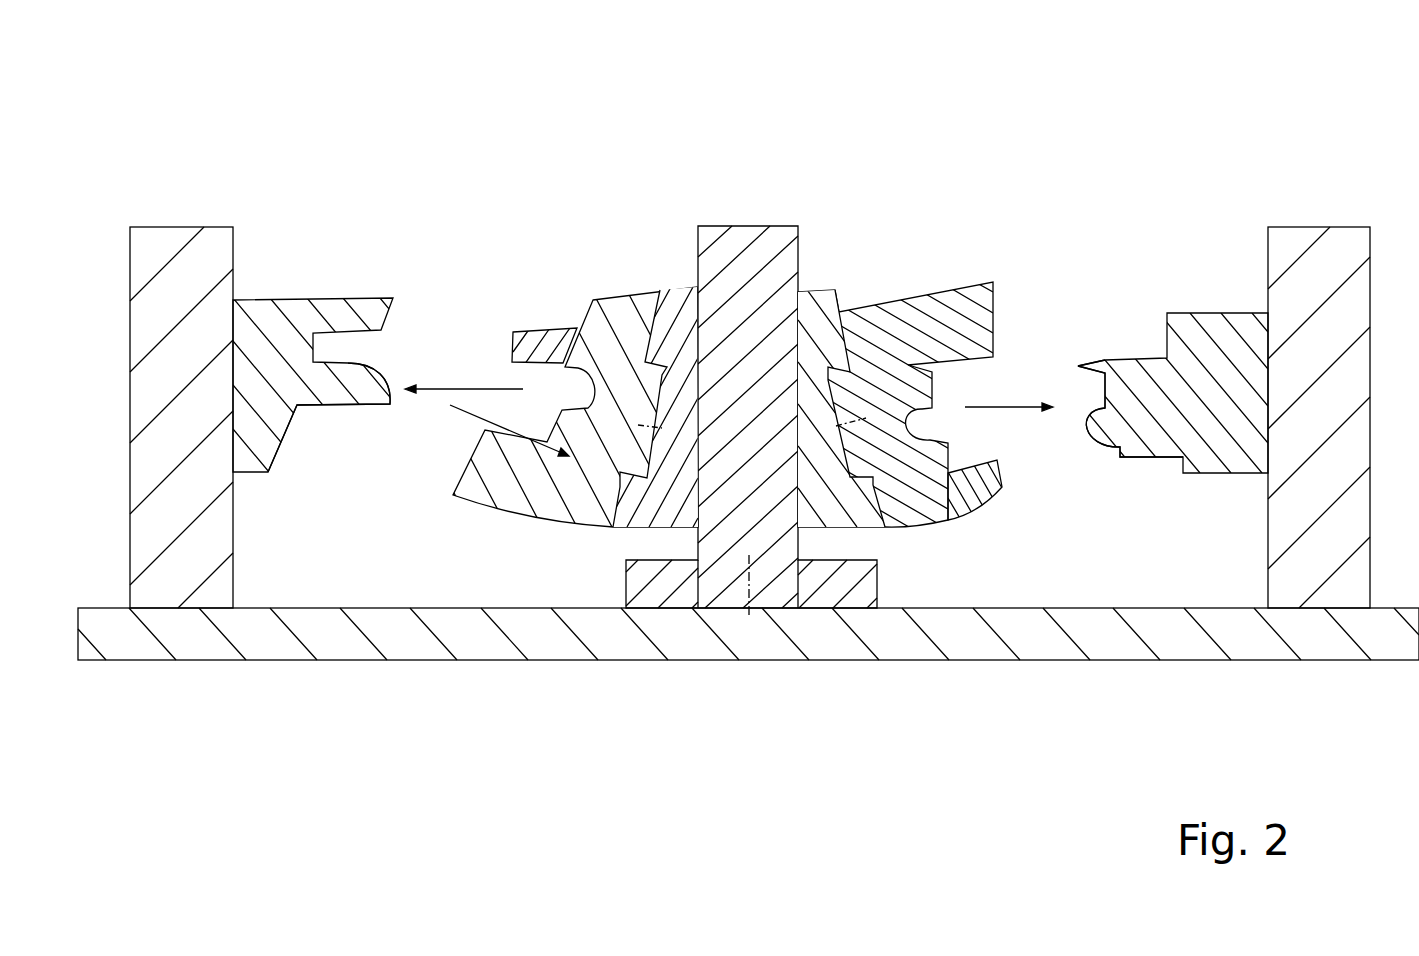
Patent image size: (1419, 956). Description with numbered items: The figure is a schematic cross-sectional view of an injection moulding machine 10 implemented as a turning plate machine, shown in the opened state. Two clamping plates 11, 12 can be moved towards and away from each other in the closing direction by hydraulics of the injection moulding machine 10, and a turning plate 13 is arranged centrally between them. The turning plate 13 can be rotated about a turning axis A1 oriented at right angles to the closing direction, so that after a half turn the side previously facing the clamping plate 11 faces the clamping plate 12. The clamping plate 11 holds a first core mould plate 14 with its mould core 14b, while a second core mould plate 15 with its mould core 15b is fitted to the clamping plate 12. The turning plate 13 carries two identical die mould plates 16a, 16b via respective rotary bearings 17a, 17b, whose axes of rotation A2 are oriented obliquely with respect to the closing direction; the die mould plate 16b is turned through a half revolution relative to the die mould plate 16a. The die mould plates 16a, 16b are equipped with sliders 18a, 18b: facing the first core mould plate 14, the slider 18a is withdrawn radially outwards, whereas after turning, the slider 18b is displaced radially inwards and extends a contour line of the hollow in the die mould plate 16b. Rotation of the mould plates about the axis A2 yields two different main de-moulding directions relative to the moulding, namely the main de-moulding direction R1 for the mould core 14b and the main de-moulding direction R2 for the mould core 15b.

The injection moulding machine 10 is at (748, 364).
The clamping plate 11 is at (1318, 227).
The clamping plate 12 is at (178, 227).
The turning plate 13 is at (746, 225).
The first core mould plate 14 is at (1214, 313).
The mould core 14b is at (1126, 457).
The second core mould plate 15 is at (285, 299).
The mould core 15b is at (330, 406).
The die mould plate 16a is at (907, 413).
The die mould plate 16b is at (575, 418).
The rotary bearing 17a is at (850, 531).
The rotary bearing 17b is at (647, 530).
The slider 18a is at (984, 492).
The slider 18b is at (541, 332).
The turning axis A1 is at (752, 603).
The axis of rotation A2 is at (639, 424).
The main de-moulding direction R1 is at (451, 412).
The main de-moulding direction R2 is at (437, 388).